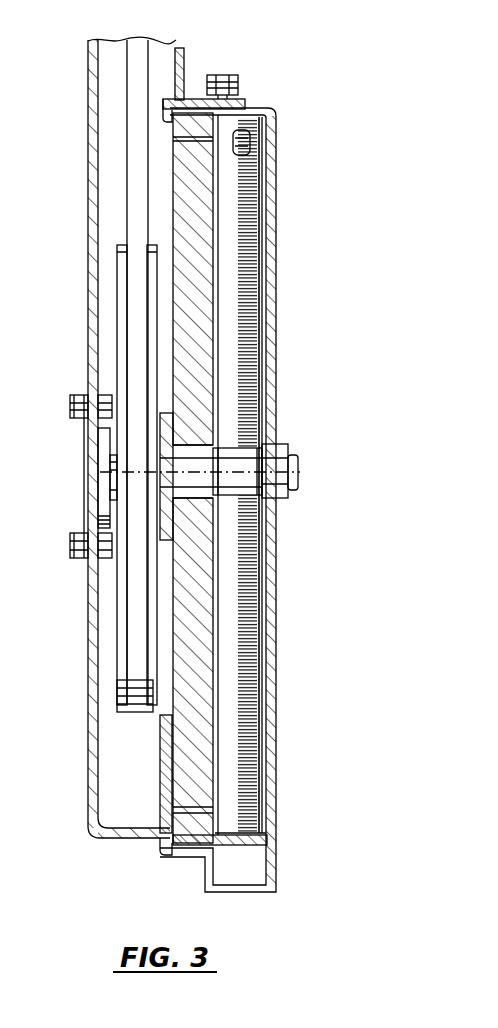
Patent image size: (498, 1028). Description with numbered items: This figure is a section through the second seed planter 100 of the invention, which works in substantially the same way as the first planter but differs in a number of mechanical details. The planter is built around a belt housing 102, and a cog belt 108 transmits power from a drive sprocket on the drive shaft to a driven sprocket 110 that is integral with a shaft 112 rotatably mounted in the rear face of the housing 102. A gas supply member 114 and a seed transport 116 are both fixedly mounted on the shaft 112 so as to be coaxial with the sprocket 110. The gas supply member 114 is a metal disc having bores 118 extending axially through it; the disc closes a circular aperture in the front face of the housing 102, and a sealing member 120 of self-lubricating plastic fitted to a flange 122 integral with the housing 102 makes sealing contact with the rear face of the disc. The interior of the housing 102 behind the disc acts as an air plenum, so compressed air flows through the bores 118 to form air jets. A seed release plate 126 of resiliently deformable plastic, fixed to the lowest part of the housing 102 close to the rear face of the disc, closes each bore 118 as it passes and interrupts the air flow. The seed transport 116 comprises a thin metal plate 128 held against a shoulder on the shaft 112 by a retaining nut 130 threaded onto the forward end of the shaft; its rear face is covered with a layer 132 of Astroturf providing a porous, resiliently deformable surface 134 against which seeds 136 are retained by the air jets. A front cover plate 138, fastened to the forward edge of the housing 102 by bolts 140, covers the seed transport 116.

The seed planter 100 is at (250, 47).
The belt housing 102 is at (90, 176).
The cog belt 108 is at (138, 302).
The driven sprocket 110 is at (73, 535).
The shaft 112 is at (110, 463).
The gas supply member 114 is at (190, 118).
The seed transport 116 is at (272, 125).
The bores 118 is at (198, 137).
The sealing member 120 is at (181, 47).
The flange 122 is at (163, 113).
The seed release plate 126 is at (163, 783).
The thin metal plate 128 is at (257, 341).
The retaining nut 130 is at (292, 458).
The layer of Astroturf 132 is at (255, 297).
The porous resiliently deformable surface 134 is at (258, 250).
The seeds 136 is at (247, 140).
The front cover plate 138 is at (276, 400).
The bolts 140 is at (232, 74).